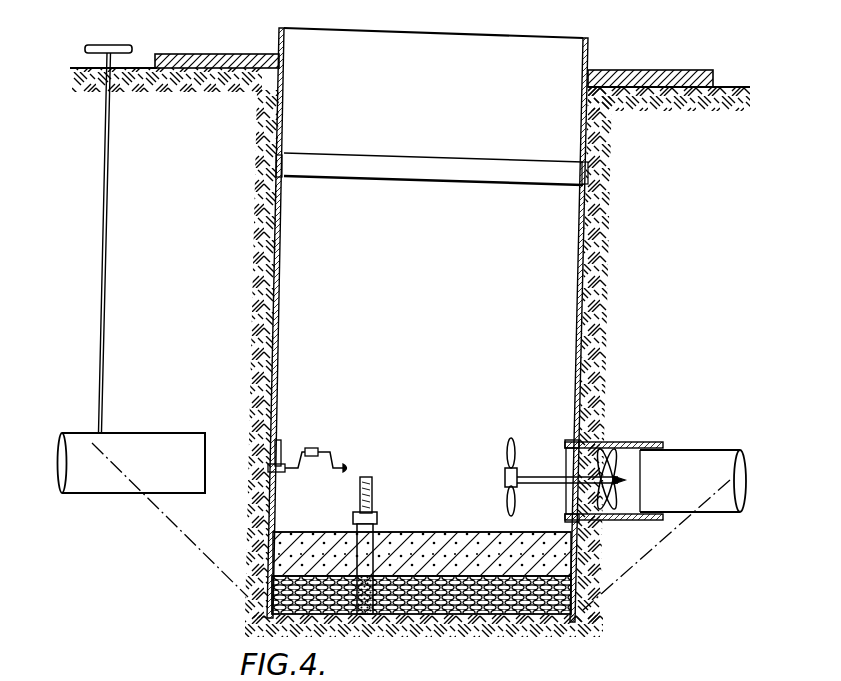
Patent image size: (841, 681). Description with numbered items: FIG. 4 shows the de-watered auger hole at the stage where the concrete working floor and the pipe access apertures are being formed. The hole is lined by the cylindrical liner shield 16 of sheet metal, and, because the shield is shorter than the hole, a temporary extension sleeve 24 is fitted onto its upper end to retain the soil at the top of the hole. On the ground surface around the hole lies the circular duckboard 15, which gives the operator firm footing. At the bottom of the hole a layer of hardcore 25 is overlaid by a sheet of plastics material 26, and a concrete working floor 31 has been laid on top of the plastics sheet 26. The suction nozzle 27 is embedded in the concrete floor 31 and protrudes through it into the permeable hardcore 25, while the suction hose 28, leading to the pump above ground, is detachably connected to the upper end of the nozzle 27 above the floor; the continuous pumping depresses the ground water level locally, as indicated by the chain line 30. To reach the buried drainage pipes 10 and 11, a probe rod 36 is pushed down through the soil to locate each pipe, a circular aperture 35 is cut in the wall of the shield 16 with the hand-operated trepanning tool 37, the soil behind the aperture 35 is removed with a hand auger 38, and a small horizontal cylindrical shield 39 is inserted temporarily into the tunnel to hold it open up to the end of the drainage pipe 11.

The drainage pipe 10 is at (83, 478).
The drainage pipe 11 is at (697, 453).
The circular duckboard 15 is at (239, 56).
The cylindrical liner shield 16 is at (577, 318).
The temporary extension sleeve 24 is at (582, 130).
The layer of hardcore 25 is at (434, 618).
The sheet of plastics material 26 is at (462, 577).
The suction nozzle 27 is at (368, 548).
The suction hose 28 is at (373, 492).
The chain line 30 is at (202, 552).
The concrete working floor 31 is at (507, 545).
The circular aperture 35 is at (572, 438).
The probe rod 36 is at (108, 274).
The hand-operated trepanning tool 37 is at (324, 444).
The hand auger 38 is at (598, 465).
The horizontal cylindrical shield 39 is at (628, 433).